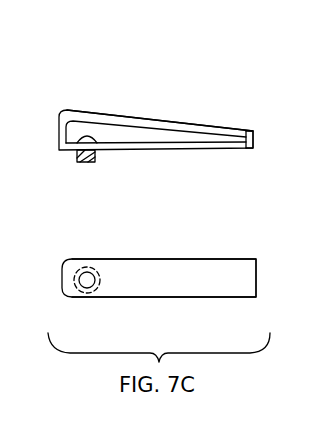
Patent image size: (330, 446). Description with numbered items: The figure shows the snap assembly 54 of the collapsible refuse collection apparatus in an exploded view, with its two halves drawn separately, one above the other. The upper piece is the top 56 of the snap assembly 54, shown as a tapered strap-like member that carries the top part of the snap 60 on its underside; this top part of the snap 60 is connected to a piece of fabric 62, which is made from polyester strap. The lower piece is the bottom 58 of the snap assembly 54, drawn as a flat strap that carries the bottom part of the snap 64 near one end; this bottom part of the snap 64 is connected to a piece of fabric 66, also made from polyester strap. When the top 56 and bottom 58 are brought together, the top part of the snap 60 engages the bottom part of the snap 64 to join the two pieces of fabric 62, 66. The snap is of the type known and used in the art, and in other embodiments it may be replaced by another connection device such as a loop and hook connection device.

The snap assembly 54 is at (110, 75).
The top 56 is at (241, 134).
The bottom 58 is at (249, 275).
The top part of the snap 60 is at (91, 158).
The piece of fabric 62 is at (135, 118).
The bottom part of the snap 64 is at (89, 266).
The piece of fabric 66 is at (187, 275).